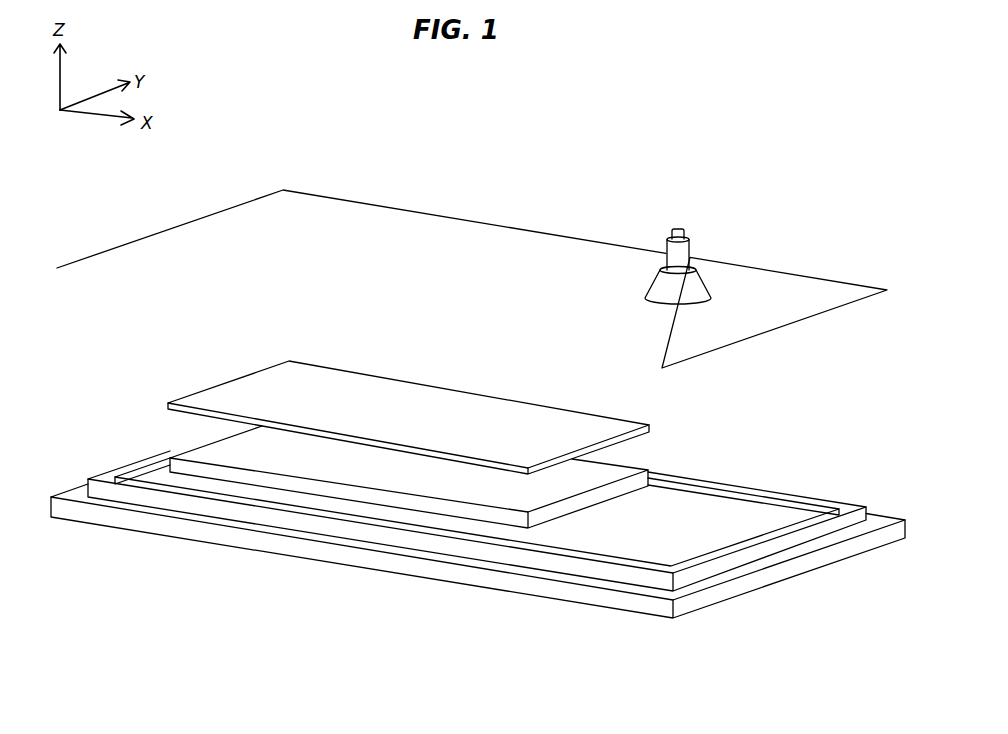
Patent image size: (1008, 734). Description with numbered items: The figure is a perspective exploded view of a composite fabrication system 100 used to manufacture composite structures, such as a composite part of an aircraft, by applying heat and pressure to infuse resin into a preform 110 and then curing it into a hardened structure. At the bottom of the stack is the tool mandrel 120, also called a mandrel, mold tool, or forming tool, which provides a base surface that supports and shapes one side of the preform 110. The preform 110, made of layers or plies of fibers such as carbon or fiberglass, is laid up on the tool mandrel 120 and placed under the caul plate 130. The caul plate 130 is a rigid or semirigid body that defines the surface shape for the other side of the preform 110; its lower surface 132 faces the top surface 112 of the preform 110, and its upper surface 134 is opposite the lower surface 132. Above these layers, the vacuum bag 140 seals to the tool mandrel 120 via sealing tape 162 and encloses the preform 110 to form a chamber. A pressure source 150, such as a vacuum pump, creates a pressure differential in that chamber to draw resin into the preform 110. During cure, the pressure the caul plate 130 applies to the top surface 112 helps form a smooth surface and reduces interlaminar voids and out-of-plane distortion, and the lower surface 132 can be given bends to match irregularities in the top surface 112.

The composite fabrication system 100 is at (638, 124).
The preform 110 is at (187, 461).
The top surface 112 is at (567, 487).
The tool mandrel 120 is at (103, 518).
The caul plate 130 is at (222, 375).
The lower surface 132 is at (652, 431).
The upper surface 134 is at (592, 422).
The vacuum bag 140 is at (413, 225).
The pressure source 150 is at (690, 250).
The sealing tape 162 is at (807, 496).